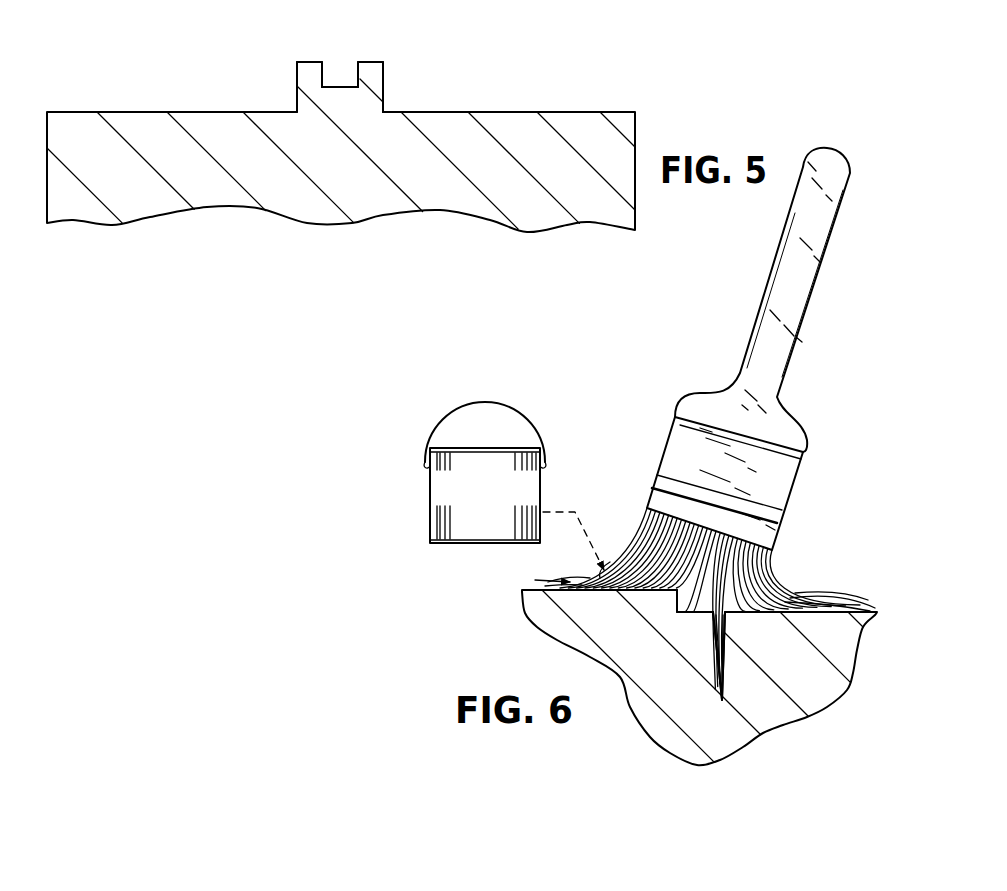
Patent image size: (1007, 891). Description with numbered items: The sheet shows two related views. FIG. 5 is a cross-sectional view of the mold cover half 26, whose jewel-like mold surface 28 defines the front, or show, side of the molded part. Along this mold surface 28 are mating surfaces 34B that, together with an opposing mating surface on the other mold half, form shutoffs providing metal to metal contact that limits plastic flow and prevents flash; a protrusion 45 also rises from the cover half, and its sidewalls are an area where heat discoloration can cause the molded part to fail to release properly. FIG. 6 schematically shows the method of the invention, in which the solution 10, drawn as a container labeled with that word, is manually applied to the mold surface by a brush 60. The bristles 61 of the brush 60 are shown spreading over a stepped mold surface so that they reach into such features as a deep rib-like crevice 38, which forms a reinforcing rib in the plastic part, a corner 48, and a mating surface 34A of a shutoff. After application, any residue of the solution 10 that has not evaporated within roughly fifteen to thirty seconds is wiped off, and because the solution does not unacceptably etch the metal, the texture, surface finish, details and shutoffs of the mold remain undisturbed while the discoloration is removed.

In FIG. 6, the solution 10 is at (430, 513).
In FIG. 5, the mold cover half 26 is at (640, 112).
In FIG. 5, the mold surface 28 is at (425, 110).
In FIG. 6, the mating surface 34A is at (655, 597).
In FIG. 5, the mating surface 34B is at (172, 112).
In FIG. 6, the crevice 38 is at (722, 679).
In FIG. 5, the protrusion 45 is at (384, 100).
In FIG. 6, the corner 48 is at (677, 613).
In FIG. 6, the brush 60 is at (799, 467).
In FIG. 6, the bristles 61 is at (783, 590).